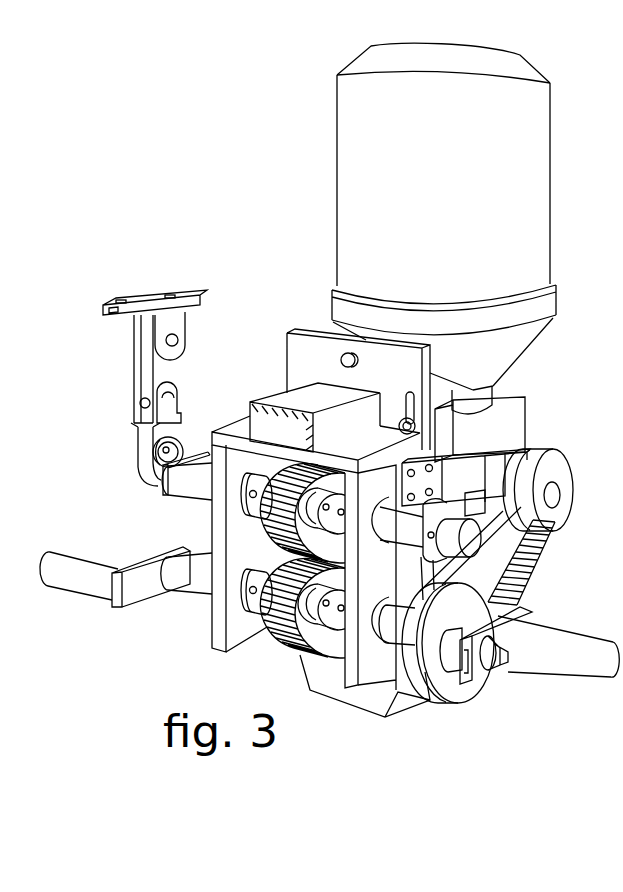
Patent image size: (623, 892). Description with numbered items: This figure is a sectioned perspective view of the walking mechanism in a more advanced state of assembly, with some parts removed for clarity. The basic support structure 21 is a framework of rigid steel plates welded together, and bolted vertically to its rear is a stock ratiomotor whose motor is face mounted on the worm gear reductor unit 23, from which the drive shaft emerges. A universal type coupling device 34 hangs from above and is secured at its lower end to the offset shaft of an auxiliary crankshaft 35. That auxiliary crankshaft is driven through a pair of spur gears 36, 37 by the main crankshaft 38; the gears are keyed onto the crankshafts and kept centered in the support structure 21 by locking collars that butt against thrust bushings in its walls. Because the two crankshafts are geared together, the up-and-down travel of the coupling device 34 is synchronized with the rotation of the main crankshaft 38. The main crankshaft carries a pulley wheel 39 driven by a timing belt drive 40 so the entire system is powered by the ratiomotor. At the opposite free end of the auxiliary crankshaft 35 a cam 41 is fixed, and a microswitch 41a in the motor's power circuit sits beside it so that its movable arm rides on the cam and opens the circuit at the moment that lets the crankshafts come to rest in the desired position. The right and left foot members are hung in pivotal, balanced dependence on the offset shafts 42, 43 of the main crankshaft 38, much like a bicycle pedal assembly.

The basic support structure 21 is at (297, 360).
The worm gear reductor unit 23 is at (511, 448).
The universal type coupling device 34 is at (133, 405).
The auxiliary crankshaft 35 is at (197, 486).
The spur gear 36 is at (281, 527).
The spur gear 37 is at (286, 632).
The main crankshaft 38 is at (193, 580).
The pulley wheel 39 is at (455, 693).
The timing belt drive 40 is at (492, 556).
The cam 41 is at (416, 526).
The microswitch 41a is at (490, 473).
The offset shaft 42 is at (96, 578).
The offset shaft 43 is at (552, 654).